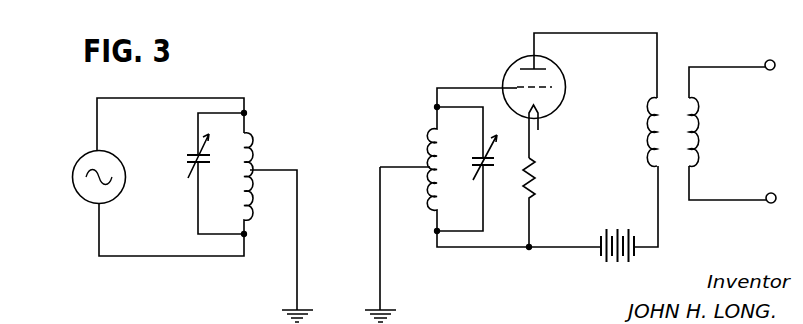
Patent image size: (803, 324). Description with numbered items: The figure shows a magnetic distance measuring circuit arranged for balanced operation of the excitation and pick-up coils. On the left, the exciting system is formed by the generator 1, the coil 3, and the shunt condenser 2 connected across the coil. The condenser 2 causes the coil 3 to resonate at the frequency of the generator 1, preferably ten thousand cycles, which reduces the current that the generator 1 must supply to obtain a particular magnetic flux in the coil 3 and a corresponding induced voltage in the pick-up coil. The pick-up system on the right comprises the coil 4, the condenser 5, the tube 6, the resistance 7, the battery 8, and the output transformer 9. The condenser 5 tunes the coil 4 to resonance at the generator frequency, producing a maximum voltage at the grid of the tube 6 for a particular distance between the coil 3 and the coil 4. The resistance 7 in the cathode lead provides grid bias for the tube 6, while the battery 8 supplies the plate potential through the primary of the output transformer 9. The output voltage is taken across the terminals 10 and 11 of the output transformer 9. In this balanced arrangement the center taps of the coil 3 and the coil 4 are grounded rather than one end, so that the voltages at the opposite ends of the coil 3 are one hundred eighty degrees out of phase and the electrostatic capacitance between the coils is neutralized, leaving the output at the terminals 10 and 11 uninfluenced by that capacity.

The generator 1 is at (73, 176).
The condenser 2 is at (196, 158).
The coil 3 is at (248, 155).
The coil 4 is at (428, 143).
The condenser 5 is at (480, 157).
The tube 6 is at (565, 86).
The resistance 7 is at (536, 170).
The battery 8 is at (618, 232).
The output transformer 9 is at (650, 133).
The terminal 10 is at (762, 59).
The terminal 11 is at (768, 192).